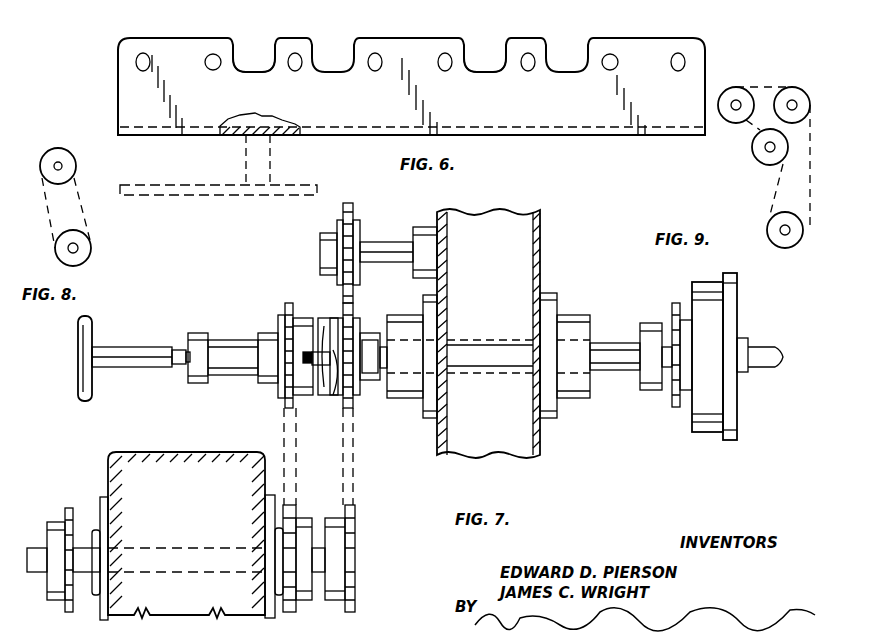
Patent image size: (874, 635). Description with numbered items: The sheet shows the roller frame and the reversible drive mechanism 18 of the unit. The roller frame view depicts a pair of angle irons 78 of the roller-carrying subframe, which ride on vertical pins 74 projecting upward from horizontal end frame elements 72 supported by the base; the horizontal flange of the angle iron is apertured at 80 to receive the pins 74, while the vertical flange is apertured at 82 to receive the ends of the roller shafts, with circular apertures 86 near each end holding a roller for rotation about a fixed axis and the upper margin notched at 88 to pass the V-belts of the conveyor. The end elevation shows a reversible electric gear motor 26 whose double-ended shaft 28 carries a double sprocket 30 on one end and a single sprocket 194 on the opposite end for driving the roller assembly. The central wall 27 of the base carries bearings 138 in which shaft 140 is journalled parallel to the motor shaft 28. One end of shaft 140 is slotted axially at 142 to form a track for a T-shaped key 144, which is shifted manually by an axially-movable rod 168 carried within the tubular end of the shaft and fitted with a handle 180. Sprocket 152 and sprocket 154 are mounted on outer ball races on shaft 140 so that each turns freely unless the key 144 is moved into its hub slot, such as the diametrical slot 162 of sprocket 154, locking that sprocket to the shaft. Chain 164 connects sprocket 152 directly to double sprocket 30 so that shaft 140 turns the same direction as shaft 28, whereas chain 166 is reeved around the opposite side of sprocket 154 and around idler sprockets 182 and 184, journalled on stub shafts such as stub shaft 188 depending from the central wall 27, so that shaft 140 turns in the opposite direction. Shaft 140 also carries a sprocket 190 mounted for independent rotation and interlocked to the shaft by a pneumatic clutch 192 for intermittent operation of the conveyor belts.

In FIG. 7, the drive mechanism 18 is at (311, 251).
In FIG. 7, the reversible electric gear motor 26 is at (183, 452).
In FIG. 7, the central wall 27 is at (530, 434).
In FIG. 8, the double-ended shaft 28 is at (58, 252).
In FIG. 9, the double-ended shaft 28 is at (782, 240).
In FIG. 7, the double-ended shaft 28 is at (40, 564).
In FIG. 8, the double sprocket 30 is at (90, 252).
In FIG. 9, the double sprocket 30 is at (792, 245).
In FIG. 7, the double sprocket 30 is at (348, 612).
In FIG. 6, the horizontal end frame element 72 is at (213, 190).
In FIG. 6, the vertical pin 74 is at (165, 163).
In FIG. 6, the angle iron 78 is at (568, 135).
In FIG. 6, the aperture 80 is at (147, 135).
In FIG. 6, the aperture 82 is at (136, 60).
In FIG. 6, the circular aperture 86 is at (216, 54).
In FIG. 6, the notch 88 is at (245, 70).
In FIG. 7, the bearing 138 is at (405, 385).
In FIG. 8, the shaft 140 is at (56, 160).
In FIG. 9, the shaft 140 is at (762, 153).
In FIG. 7, the shaft 140 is at (607, 347).
In FIG. 7, the slot 142 is at (303, 354).
In FIG. 7, the T-shaped key 144 is at (315, 367).
In FIG. 8, the sprocket 152 is at (62, 160).
In FIG. 7, the sprocket 152 is at (287, 308).
In FIG. 9, the sprocket 154 is at (752, 147).
In FIG. 7, the sprocket 154 is at (355, 314).
In FIG. 7, the diametrical slot 162 is at (335, 396).
In FIG. 8, the chain 164 is at (88, 211).
In FIG. 7, the chain 164 is at (283, 428).
In FIG. 9, the chain 166 is at (776, 187).
In FIG. 7, the chain 166 is at (350, 482).
In FIG. 7, the axially-movable rod 168 is at (138, 362).
In FIG. 7, the handle 180 is at (78, 376).
In FIG. 9, the idler sprocket 182 is at (734, 92).
In FIG. 9, the idler sprocket 184 is at (793, 90).
In FIG. 7, the idler sprocket 184 is at (348, 208).
In FIG. 9, the stub shaft 188 is at (778, 92).
In FIG. 7, the stub shaft 188 is at (384, 250).
In FIG. 7, the sprocket 190 is at (676, 400).
In FIG. 7, the pneumatic clutch 192 is at (720, 400).
In FIG. 7, the single sprocket 194 is at (68, 510).